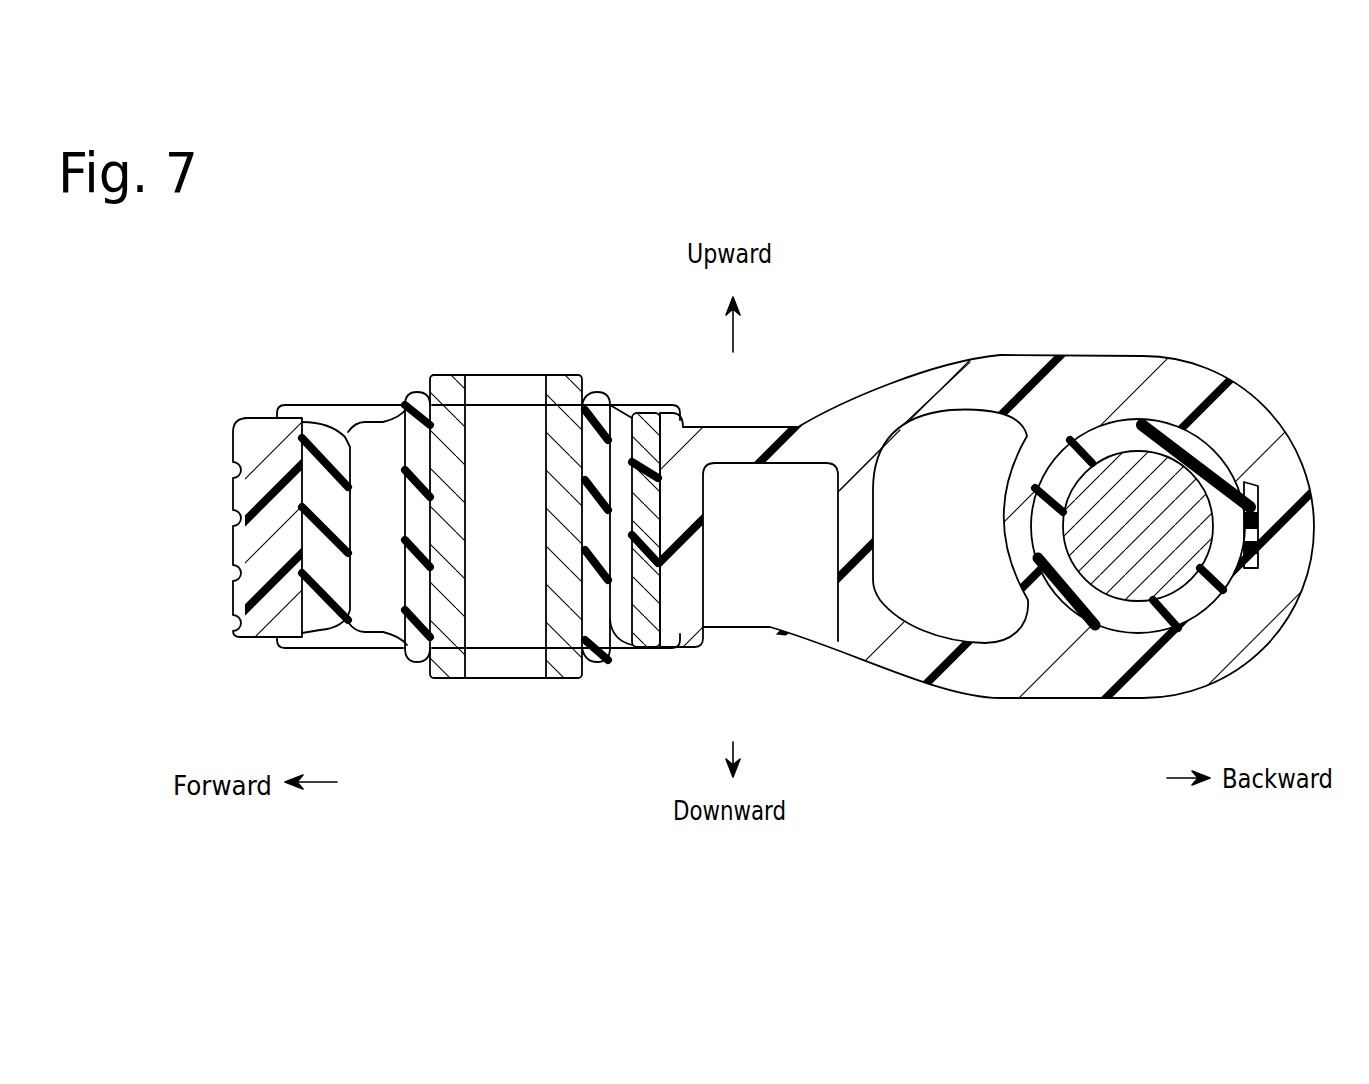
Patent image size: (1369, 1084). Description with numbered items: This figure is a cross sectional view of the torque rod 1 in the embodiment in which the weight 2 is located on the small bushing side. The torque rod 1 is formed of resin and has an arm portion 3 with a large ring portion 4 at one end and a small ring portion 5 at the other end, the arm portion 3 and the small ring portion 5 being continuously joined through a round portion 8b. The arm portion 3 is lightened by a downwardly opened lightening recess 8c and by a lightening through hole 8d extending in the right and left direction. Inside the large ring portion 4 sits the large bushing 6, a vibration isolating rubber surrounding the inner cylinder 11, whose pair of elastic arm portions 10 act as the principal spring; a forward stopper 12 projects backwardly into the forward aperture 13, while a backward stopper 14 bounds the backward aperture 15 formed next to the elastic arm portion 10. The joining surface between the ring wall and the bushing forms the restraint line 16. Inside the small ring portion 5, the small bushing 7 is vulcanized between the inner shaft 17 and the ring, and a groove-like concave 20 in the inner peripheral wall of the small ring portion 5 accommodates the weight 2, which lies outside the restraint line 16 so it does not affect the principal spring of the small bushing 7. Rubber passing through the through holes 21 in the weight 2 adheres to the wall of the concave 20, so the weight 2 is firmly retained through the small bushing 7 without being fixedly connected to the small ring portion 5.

The torque rod 1 is at (291, 308).
The weight 2 is at (1296, 532).
The arm portion 3 is at (748, 437).
The large ring portion 4 is at (265, 562).
The small ring portion 5 is at (1143, 370).
The large bushing 6 is at (326, 433).
The small bushing 7 is at (1118, 420).
The round portion 8b is at (893, 395).
The lightening recess 8c is at (765, 597).
The lightening through hole 8d is at (975, 617).
The elastic arm portion 10 is at (405, 605).
The inner cylinder 11 is at (523, 380).
The forward stopper 12 is at (327, 622).
The forward aperture 13 is at (367, 598).
The backward stopper 14 is at (637, 605).
The backward aperture 15 is at (622, 625).
The restraint line 16 is at (1205, 437).
The inner shaft 17 is at (1108, 560).
The concave 20 is at (1255, 585).
The through holes 21 is at (1260, 548).